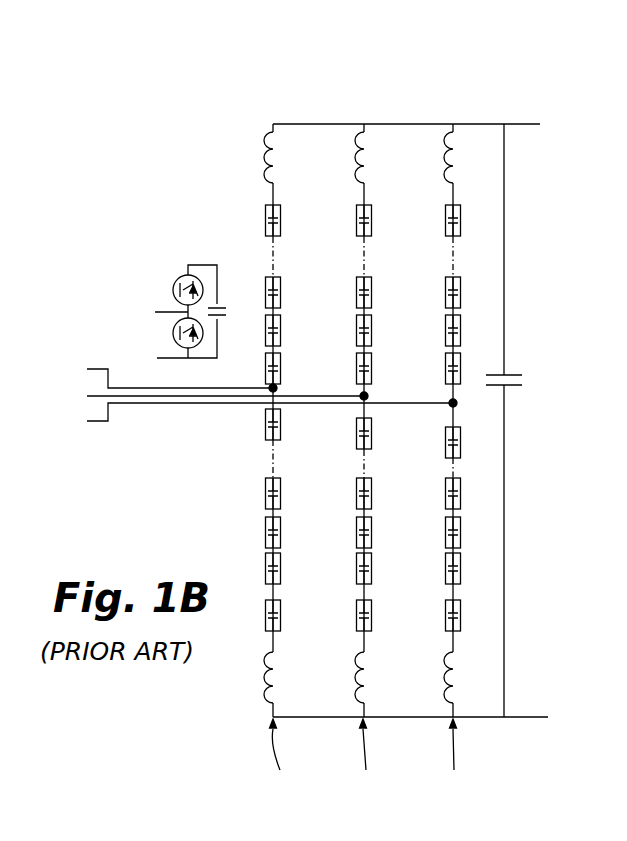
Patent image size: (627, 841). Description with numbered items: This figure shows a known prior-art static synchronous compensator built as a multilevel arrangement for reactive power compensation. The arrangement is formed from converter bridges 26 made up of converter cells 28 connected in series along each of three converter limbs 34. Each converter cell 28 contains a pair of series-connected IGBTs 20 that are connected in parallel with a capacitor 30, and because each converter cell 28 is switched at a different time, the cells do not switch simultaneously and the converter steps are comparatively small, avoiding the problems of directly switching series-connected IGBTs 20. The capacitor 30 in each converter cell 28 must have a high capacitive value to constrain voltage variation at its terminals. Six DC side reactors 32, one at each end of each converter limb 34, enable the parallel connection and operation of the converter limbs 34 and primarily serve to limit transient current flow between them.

The IGBT 20 is at (177, 283).
The converter bridge 26 is at (238, 195).
The converter cell 28 is at (136, 290).
The capacitor 30 is at (219, 306).
The DC side reactor 32 is at (275, 135).
The converter limb 34 is at (365, 759).